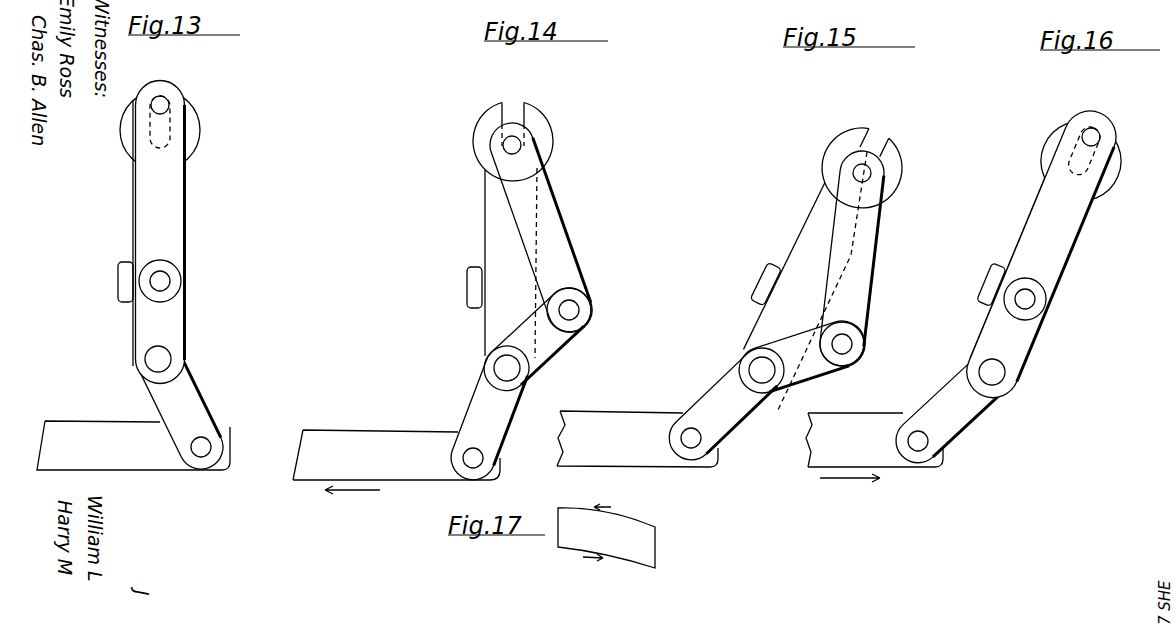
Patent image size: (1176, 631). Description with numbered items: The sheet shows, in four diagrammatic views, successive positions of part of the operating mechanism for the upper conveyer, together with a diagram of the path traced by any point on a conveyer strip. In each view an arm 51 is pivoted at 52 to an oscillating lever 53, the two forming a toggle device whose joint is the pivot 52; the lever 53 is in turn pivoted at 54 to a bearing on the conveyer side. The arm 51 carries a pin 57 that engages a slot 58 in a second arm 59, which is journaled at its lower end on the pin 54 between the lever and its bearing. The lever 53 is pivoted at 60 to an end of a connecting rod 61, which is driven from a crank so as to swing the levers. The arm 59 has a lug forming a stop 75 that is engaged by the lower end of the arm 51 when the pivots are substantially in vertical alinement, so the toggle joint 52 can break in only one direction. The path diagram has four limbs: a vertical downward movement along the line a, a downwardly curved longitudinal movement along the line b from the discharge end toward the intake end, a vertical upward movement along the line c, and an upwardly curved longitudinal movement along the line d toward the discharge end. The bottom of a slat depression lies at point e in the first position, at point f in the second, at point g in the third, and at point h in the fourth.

In FIG. 13, the arm 51 is at (150, 206).
In FIG. 14, the arm 51 is at (557, 222).
In FIG. 15, the arm 51 is at (858, 288).
In FIG. 16, the arm 51 is at (1052, 268).
In FIG. 13, the pivot 52 is at (164, 282).
In FIG. 14, the pivot 52 is at (573, 311).
In FIG. 15, the pivot 52 is at (846, 345).
In FIG. 16, the pivot 52 is at (1028, 300).
In FIG. 13, the oscillating lever 53 is at (182, 385).
In FIG. 14, the oscillating lever 53 is at (508, 400).
In FIG. 15, the oscillating lever 53 is at (800, 396).
In FIG. 16, the oscillating lever 53 is at (975, 407).
In FIG. 13, the pivot 54 is at (152, 359).
In FIG. 14, the pivot 54 is at (504, 369).
In FIG. 15, the pivot 54 is at (758, 371).
In FIG. 16, the pivot 54 is at (985, 373).
In FIG. 13, the pin 57 is at (168, 103).
In FIG. 14, the pin 57 is at (514, 146).
In FIG. 15, the pin 57 is at (870, 174).
In FIG. 16, the pin 57 is at (1100, 134).
In FIG. 13, the slot 58 is at (170, 124).
In FIG. 14, the slot 58 is at (515, 106).
In FIG. 15, the slot 58 is at (882, 140).
In FIG. 16, the slot 58 is at (1098, 160).
In FIG. 13, the arm 59 is at (134, 239).
In FIG. 14, the arm 59 is at (491, 225).
In FIG. 15, the arm 59 is at (808, 228).
In FIG. 16, the arm 59 is at (1030, 215).
In FIG. 13, the pivot 60 is at (203, 447).
In FIG. 14, the pivot 60 is at (477, 458).
In FIG. 15, the pivot 60 is at (697, 441).
In FIG. 16, the pivot 60 is at (922, 442).
In FIG. 13, the connecting rod 61 is at (70, 432).
In FIG. 14, the connecting rod 61 is at (382, 440).
In FIG. 15, the connecting rod 61 is at (630, 418).
In FIG. 16, the connecting rod 61 is at (862, 420).
In FIG. 13, the stop 75 is at (126, 275).
In FIG. 14, the stop 75 is at (472, 283).
In FIG. 15, the stop 75 is at (766, 283).
In FIG. 16, the stop 75 is at (996, 285).
In FIG. 17, the line a is at (557, 528).
In FIG. 17, the line b is at (612, 556).
In FIG. 17, the line c is at (656, 549).
In FIG. 17, the line d is at (626, 517).
In FIG. 17, the point e is at (558, 508).
In FIG. 17, the point f is at (557, 548).
In FIG. 17, the point g is at (655, 568).
In FIG. 17, the point h is at (656, 528).